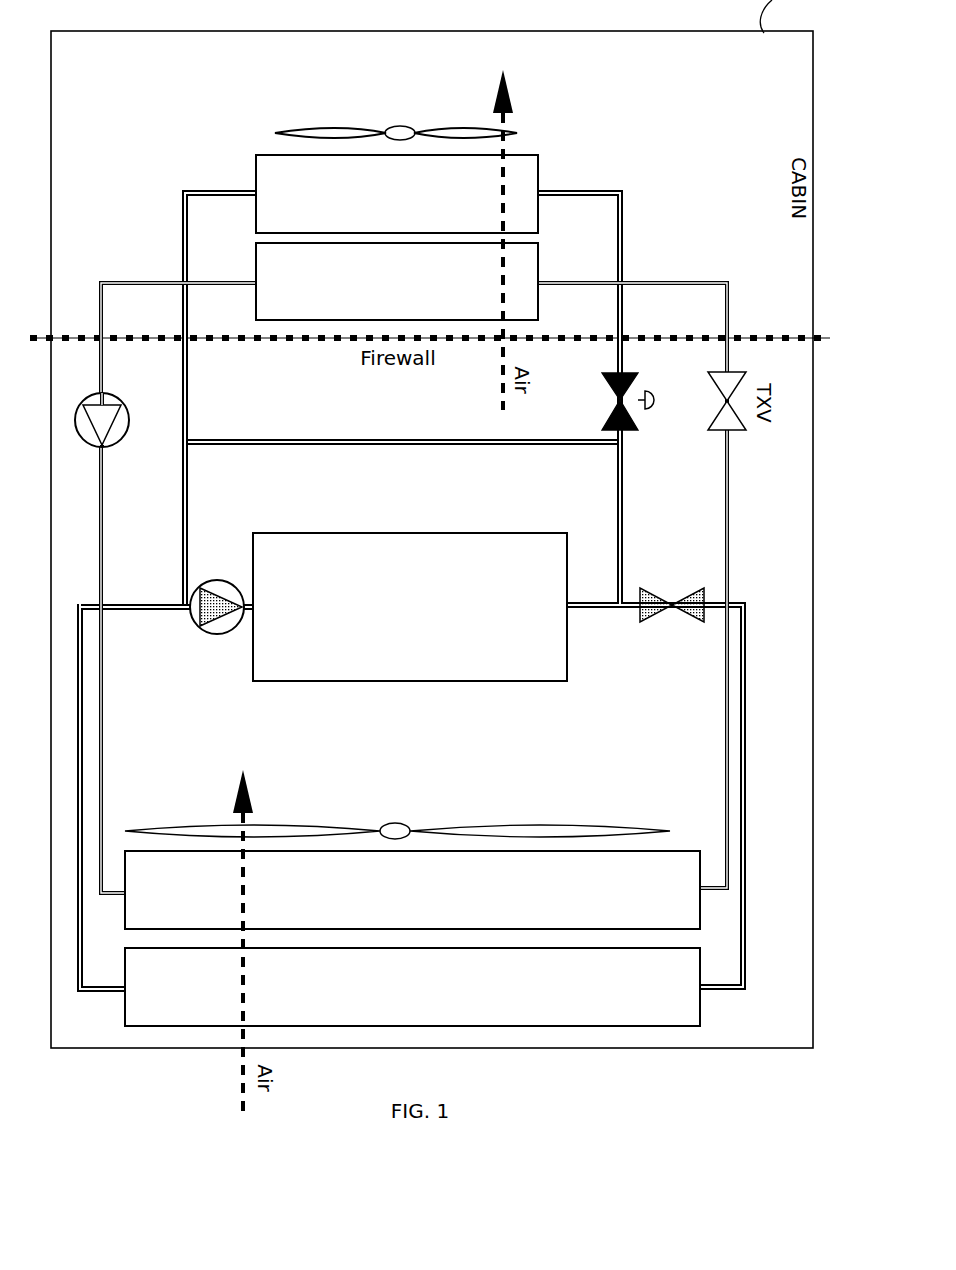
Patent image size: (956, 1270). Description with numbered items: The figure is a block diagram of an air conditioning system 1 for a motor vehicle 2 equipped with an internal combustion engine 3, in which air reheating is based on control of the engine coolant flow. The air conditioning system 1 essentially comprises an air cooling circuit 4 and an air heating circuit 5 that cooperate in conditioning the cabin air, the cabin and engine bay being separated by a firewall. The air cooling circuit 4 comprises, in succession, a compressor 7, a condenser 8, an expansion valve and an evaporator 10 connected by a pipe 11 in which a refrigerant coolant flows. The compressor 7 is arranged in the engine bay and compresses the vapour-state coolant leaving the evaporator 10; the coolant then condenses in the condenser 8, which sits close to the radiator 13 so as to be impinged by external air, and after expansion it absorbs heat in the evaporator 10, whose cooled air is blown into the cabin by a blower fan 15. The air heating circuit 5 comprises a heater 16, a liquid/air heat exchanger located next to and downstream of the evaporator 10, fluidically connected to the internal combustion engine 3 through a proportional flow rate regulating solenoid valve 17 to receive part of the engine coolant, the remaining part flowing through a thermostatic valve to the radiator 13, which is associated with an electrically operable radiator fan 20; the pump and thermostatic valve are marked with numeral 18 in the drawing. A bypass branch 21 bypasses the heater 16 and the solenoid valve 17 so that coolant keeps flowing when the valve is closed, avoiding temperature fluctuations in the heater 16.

The air conditioning system 1 is at (827, 1135).
The motor vehicle 2 is at (837, 830).
The internal combustion engine 3 is at (518, 725).
The air cooling circuit 4 is at (770, 508).
The air heating circuit 5 is at (795, 920).
The compressor 7 is at (129, 420).
The condenser 8 is at (685, 857).
The evaporator 10 is at (262, 256).
The pipe 11 is at (690, 279).
The radiator 13 is at (757, 1018).
The blower fan 15 is at (302, 131).
The heater 16 is at (268, 183).
The proportional flow rate regulating solenoid valve 17 is at (600, 391).
The pump / thermostatic valve 18 is at (690, 592).
The radiator fan 20 is at (618, 826).
The bypass branch 21 is at (430, 475).